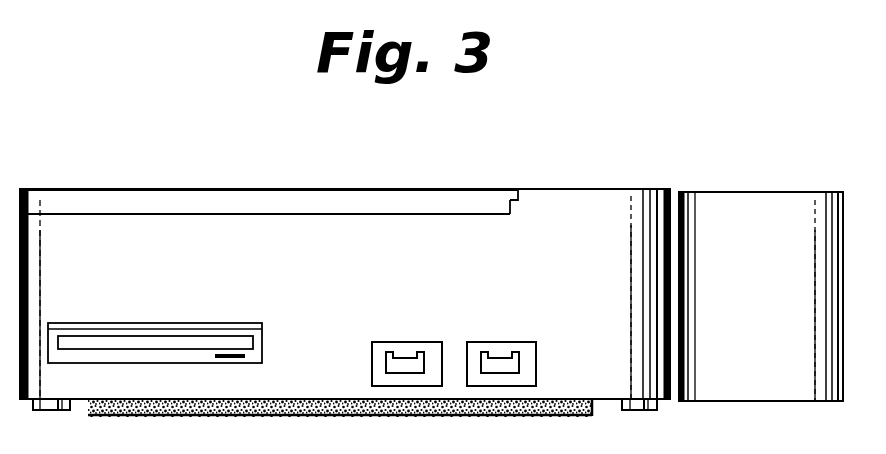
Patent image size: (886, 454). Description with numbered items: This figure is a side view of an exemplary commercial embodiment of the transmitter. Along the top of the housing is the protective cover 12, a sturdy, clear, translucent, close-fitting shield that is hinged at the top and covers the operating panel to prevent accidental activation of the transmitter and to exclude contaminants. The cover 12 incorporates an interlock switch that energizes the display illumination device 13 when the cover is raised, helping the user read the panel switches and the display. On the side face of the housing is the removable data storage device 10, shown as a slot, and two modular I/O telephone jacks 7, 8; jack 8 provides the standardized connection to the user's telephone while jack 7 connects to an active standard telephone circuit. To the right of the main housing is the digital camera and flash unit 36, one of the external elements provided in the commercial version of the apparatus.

The protective cover 12 is at (143, 190).
The display illumination device 13 is at (500, 200).
The digital camera and flash unit 36 is at (750, 192).
The removable data storage device 10 is at (170, 323).
The modular I/O telephone jack 7 is at (400, 342).
The modular I/O telephone jack 8 is at (505, 342).